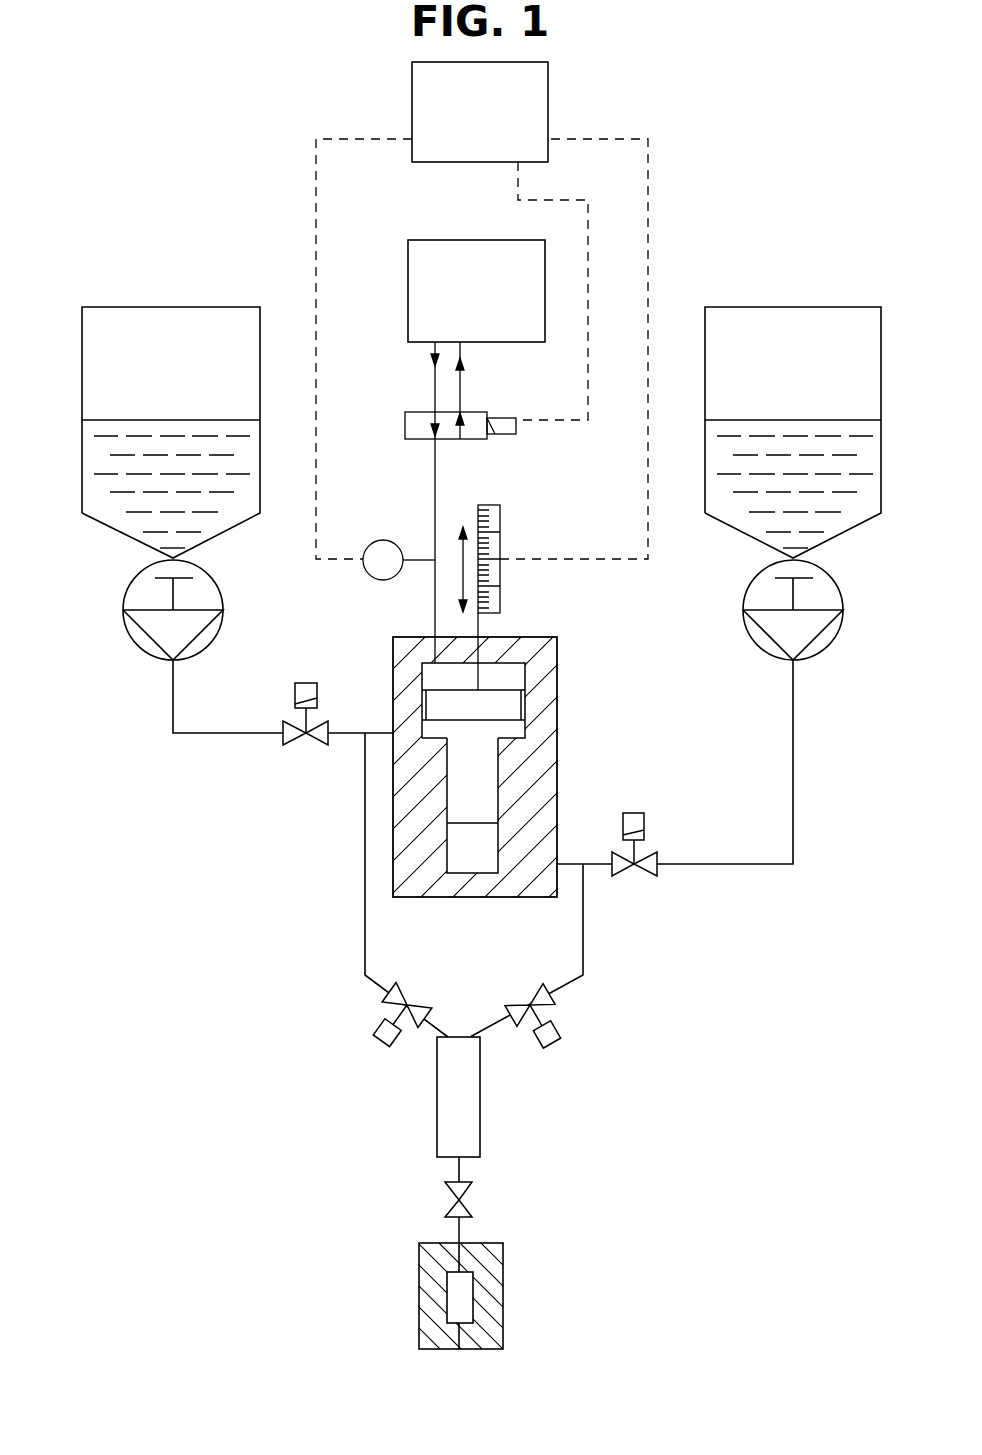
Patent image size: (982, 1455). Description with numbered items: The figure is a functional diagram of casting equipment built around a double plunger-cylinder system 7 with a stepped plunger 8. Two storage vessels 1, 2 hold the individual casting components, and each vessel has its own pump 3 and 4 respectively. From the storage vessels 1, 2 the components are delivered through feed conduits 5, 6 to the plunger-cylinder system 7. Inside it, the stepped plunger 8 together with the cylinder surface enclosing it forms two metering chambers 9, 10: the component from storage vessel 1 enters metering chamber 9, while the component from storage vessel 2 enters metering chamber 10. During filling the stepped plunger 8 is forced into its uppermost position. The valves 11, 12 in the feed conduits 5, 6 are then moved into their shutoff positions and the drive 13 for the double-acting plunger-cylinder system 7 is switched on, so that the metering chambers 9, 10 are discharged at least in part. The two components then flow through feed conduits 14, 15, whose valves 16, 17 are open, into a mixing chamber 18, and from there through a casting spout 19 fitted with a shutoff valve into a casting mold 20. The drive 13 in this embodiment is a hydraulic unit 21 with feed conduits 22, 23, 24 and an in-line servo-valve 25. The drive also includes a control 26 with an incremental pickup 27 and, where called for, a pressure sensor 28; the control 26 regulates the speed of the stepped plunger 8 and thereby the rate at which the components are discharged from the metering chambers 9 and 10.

The storage vessel 1 is at (181, 371).
The storage vessel 2 is at (780, 371).
The pump 3 is at (152, 644).
The pump 4 is at (812, 642).
The feed conduit 5 is at (259, 736).
The feed conduit 6 is at (718, 762).
The double plunger-cylinder system 7 is at (571, 766).
The stepped plunger 8 is at (460, 803).
The metering chamber 9 is at (517, 730).
The metering chamber 10 is at (485, 868).
The valve 11 is at (306, 738).
The valve 12 is at (634, 866).
The drive 13 is at (372, 275).
The feed conduit 14 is at (365, 930).
The feed conduit 15 is at (583, 950).
The valve 16 is at (407, 1003).
The valve 17 is at (530, 1003).
The mixing chamber 18 is at (477, 1125).
The casting spout 19 is at (467, 1200).
The casting mold 20 is at (503, 1292).
The hydraulic unit 21 is at (460, 306).
The feed conduit 22 is at (435, 383).
The feed conduit 23 is at (460, 370).
The feed conduit 24 is at (435, 492).
The servo-valve 25 is at (477, 433).
The control 26 is at (464, 118).
The incremental pickup 27 is at (517, 576).
The pressure sensor 28 is at (385, 575).